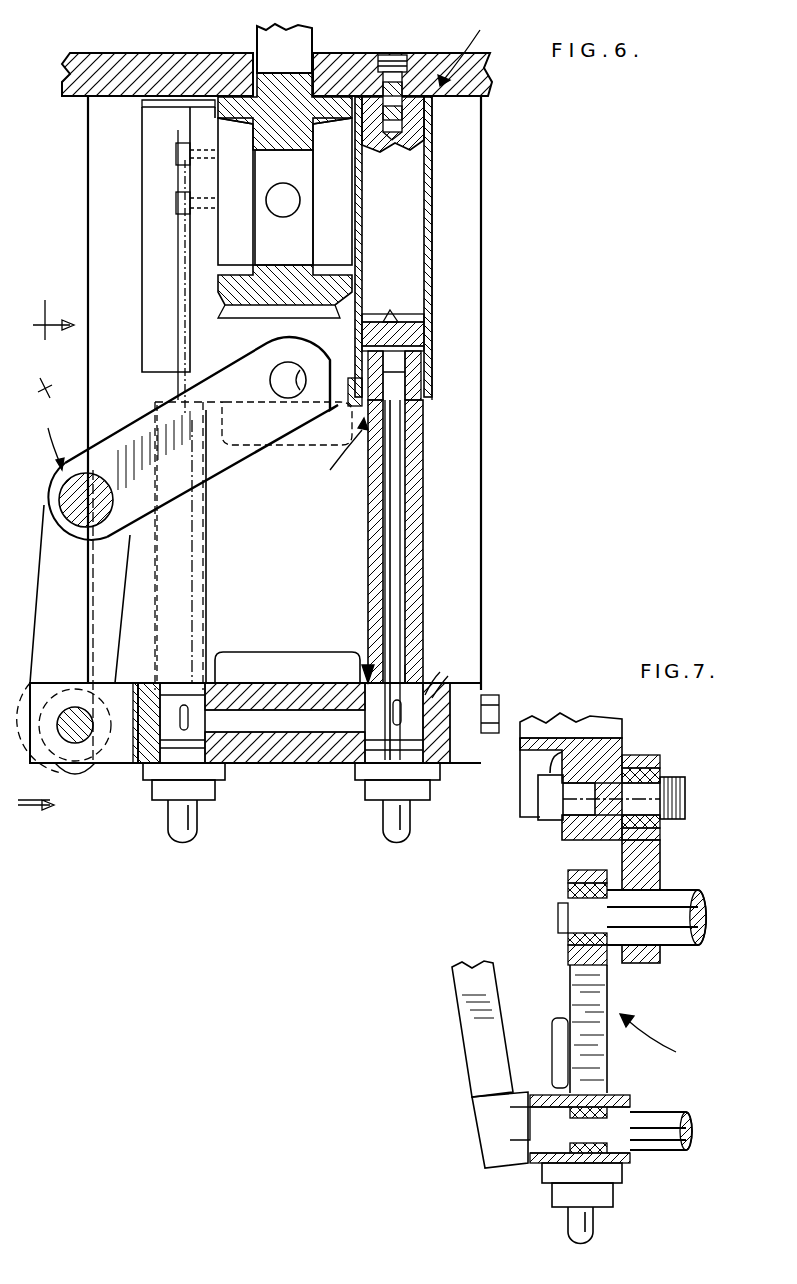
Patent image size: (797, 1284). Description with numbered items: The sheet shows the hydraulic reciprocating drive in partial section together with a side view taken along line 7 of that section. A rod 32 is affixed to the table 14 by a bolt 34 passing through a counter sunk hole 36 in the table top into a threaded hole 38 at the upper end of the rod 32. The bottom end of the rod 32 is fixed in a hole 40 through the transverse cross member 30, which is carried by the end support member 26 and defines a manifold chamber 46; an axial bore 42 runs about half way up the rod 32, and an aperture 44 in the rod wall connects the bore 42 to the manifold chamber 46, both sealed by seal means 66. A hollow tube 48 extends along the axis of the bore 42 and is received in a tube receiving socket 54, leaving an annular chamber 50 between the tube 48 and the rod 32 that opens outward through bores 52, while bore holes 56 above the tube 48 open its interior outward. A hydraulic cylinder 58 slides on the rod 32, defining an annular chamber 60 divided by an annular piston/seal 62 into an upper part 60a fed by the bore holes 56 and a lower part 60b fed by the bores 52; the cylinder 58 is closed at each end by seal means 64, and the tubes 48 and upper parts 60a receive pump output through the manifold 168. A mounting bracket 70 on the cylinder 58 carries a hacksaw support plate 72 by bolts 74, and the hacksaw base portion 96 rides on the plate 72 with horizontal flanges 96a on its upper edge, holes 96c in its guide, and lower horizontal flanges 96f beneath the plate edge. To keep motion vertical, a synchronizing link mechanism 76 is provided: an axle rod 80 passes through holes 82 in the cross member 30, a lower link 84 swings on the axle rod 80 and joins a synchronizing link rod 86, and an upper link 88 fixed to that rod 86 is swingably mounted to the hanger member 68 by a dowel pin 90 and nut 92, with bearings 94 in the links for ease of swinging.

In FIG. 6, the table 14 is at (192, 72).
In FIG. 6, the end support member 26 is at (287, 613).
In FIG. 7, the end support member 26 is at (455, 1010).
In FIG. 6, the transverse cross member 30 is at (270, 768).
In FIG. 6, the rod 32 is at (422, 505).
In FIG. 6, the bolt 34 is at (404, 54).
In FIG. 6, the counter sunk hole 36 is at (393, 54).
In FIG. 6, the threaded hole 38 is at (373, 98).
In FIG. 6, the hole 40 is at (160, 705).
In FIG. 6, the axial bore 42 is at (412, 578).
In FIG. 6, the aperture 44 is at (420, 700).
In FIG. 6, the manifold chamber 46 is at (245, 766).
In FIG. 6, the hollow tube 48 is at (402, 470).
In FIG. 6, the annular chamber 50 is at (368, 558).
In FIG. 6, the bore 52 is at (418, 402).
In FIG. 6, the tube receiving socket 54 is at (418, 348).
In FIG. 6, the bore hole 56 is at (426, 328).
In FIG. 6, the hydraulic cylinder 58 is at (498, 187).
In FIG. 6, the annular chamber 60 is at (433, 270).
In FIG. 6, the upper chamber part 60a is at (366, 232).
In FIG. 6, the lower chamber part 60b is at (356, 378).
In FIG. 6, the annular piston/seal 62 is at (385, 320).
In FIG. 6, the seal means 64 is at (407, 250).
In FIG. 6, the seal means 66 is at (366, 668).
In FIG. 6, the hanger member 68 is at (306, 445).
In FIG. 7, the hanger member 68 is at (604, 738).
In FIG. 6, the mounting bracket 70 is at (176, 225).
In FIG. 6, the hacksaw support plate 72 is at (283, 191).
In FIG. 6, the bolt 74 is at (176, 155).
In FIG. 6, the synchronizing link mechanism 76 is at (45, 424).
In FIG. 7, the synchronizing link mechanism 76 is at (666, 1036).
In FIG. 6, the section line 7 is at (41, 551).
In FIG. 6, the axle rod 80 is at (88, 745).
In FIG. 7, the axle rod 80 is at (665, 1113).
In FIG. 6, the hole 82 is at (68, 765).
In FIG. 6, the lower link 84 is at (184, 550).
In FIG. 7, the lower link 84 is at (572, 994).
In FIG. 6, the synchronizing link rod 86 is at (78, 522).
In FIG. 7, the synchronizing link rod 86 is at (680, 946).
In FIG. 6, the upper link 88 is at (171, 546).
In FIG. 7, the upper link 88 is at (662, 878).
In FIG. 6, the dowel pin 90 is at (270, 383).
In FIG. 7, the dowel pin 90 is at (686, 790).
In FIG. 7, the nut 92 is at (546, 822).
In FIG. 7, the bearing 94 is at (645, 756).
In FIG. 6, the base portion 96 is at (285, 164).
In FIG. 6, the horizontal flange 96a is at (248, 136).
In FIG. 6, the hole 96c is at (300, 170).
In FIG. 6, the lower horizontal flange 96f is at (245, 308).
In FIG. 6, the manifold 168 is at (178, 835).
In FIG. 7, the manifold 168 is at (596, 1230).